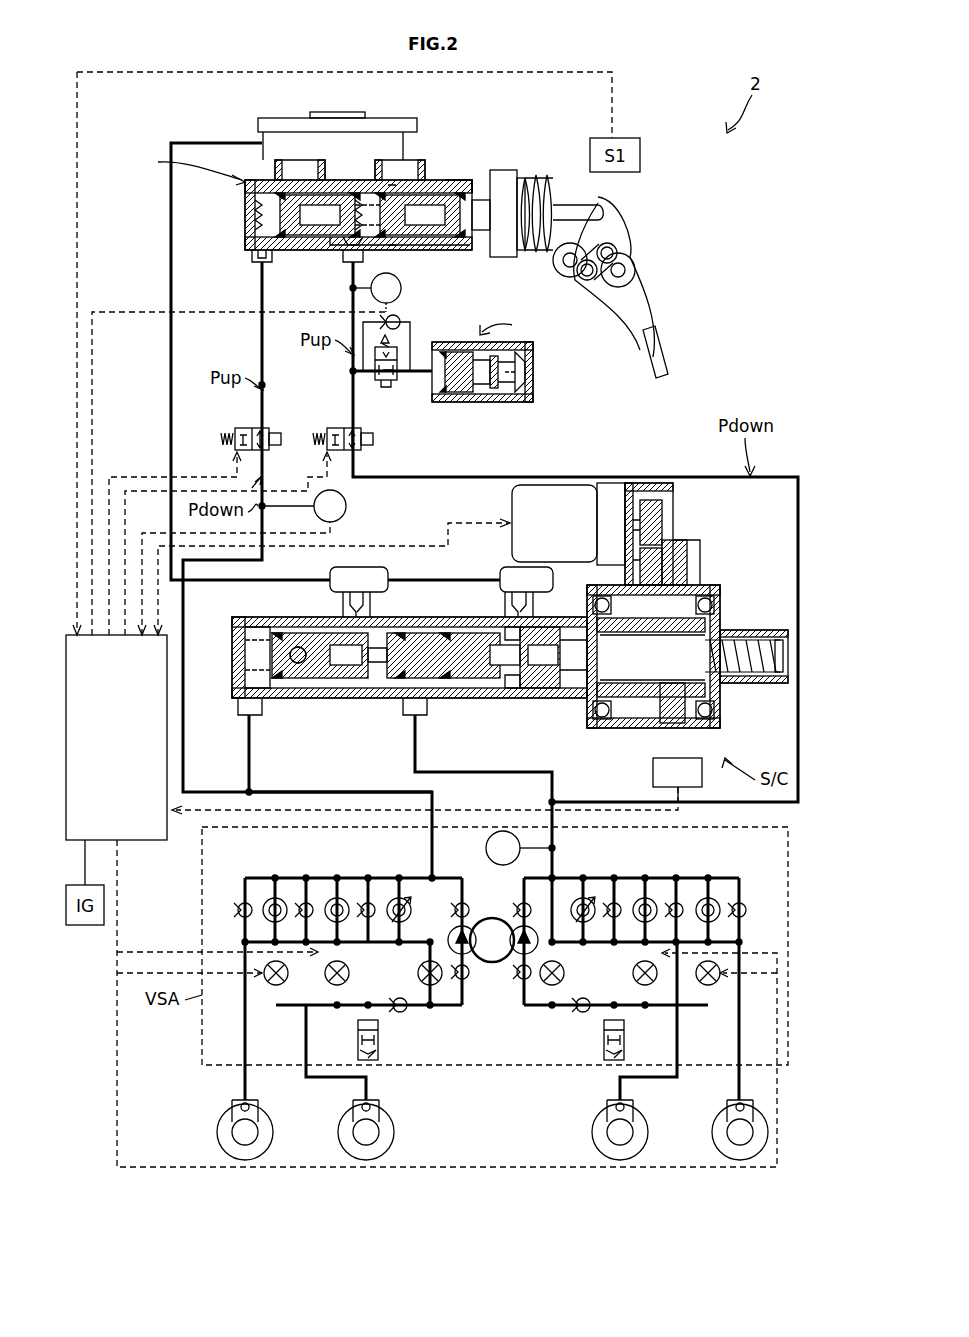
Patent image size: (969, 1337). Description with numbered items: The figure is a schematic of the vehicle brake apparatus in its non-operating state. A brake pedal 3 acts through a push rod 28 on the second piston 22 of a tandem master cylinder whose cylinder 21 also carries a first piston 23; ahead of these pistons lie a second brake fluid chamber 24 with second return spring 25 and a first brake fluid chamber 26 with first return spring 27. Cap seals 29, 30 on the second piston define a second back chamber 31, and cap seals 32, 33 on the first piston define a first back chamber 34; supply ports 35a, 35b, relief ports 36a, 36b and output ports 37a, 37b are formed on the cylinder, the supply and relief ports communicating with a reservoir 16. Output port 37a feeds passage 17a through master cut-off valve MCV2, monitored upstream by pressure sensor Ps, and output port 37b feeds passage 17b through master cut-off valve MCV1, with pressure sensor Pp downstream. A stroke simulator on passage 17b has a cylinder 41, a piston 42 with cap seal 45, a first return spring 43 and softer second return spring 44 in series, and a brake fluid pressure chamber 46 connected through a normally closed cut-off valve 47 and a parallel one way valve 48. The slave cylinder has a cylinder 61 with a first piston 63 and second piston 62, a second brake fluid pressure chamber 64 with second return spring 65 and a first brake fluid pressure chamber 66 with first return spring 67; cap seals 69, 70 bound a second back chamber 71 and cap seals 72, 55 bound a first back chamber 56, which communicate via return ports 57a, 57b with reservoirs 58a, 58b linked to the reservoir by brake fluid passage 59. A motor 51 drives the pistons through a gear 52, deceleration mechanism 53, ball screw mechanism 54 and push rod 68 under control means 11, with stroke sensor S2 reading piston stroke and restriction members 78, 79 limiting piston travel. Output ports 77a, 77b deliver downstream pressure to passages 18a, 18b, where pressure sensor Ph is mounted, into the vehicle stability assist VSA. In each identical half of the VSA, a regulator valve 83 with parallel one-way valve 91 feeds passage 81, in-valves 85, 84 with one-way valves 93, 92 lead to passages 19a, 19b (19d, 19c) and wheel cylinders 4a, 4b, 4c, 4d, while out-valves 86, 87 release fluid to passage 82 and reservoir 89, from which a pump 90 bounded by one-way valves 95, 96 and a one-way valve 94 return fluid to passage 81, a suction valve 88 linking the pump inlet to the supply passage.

The brake pedal 3 is at (668, 345).
The wheel cylinder 4a is at (724, 1108).
The wheel cylinder 4b is at (604, 1108).
The wheel cylinder 4c is at (384, 1102).
The wheel cylinder 4d is at (262, 1102).
The control means 11 is at (137, 842).
The reservoir 16 is at (265, 132).
The brake fluid pressure passage 17a is at (352, 392).
The brake fluid pressure passage 17b is at (262, 352).
The brake fluid pressure passage 18a is at (550, 784).
The brake fluid pressure passage 18b is at (345, 790).
The brake fluid passage 19a is at (739, 1084).
The brake fluid passage 19b is at (620, 1084).
The brake fluid passage 19c is at (368, 1082).
The brake fluid passage 19d is at (244, 1082).
The cylinder 21 is at (462, 182).
The second piston 22 is at (420, 215).
The first piston 23 is at (317, 215).
The second brake fluid chamber 24 is at (366, 200).
The second return spring 25 is at (400, 246).
The first brake fluid chamber 26 is at (280, 182).
The first return spring 27 is at (258, 210).
The push rod 28 is at (527, 175).
The cap seal 29 is at (392, 186).
The cap seal 30 is at (503, 170).
The second back chamber 31 is at (481, 200).
The cap seal 32 is at (295, 240).
The cap seal 33 is at (352, 262).
The first back chamber 34 is at (318, 240).
The supply port 35a is at (458, 193).
The supply port 35b is at (355, 193).
The relief port 36a is at (378, 193).
The relief port 36b is at (280, 193).
The output port 37a is at (356, 246).
The output port 37b is at (258, 252).
The cylinder 41 is at (520, 392).
The piston 42 is at (460, 392).
The first return spring 43 is at (533, 380).
The second return spring 44 is at (496, 390).
The cap seal 45 is at (470, 384).
The brake fluid pressure chamber 46 is at (442, 392).
The cut-off valve 47 is at (398, 380).
The one way valve 48 is at (400, 320).
The motor 51 is at (512, 505).
The gear 52 is at (662, 505).
The deceleration mechanism 53 is at (684, 548).
The ball screw mechanism 54 is at (730, 596).
The cap seal 55 is at (400, 698).
The first back chamber 56 is at (365, 698).
The return port 57a is at (538, 609).
The return port 57b is at (348, 609).
The reservoir 58a is at (508, 568).
The reservoir 58b is at (355, 568).
The brake fluid passage 59 is at (171, 244).
The cylinder 61 is at (590, 728).
The second piston 62 is at (453, 655).
The first piston 63 is at (320, 655).
The second brake fluid pressure chamber 64 is at (425, 630).
The second return spring 65 is at (420, 690).
The first brake fluid pressure chamber 66 is at (248, 638).
The first return spring 67 is at (255, 715).
The push rod 68 is at (768, 645).
The cap seal 69 is at (450, 680).
The cap seal 70 is at (575, 698).
The second back chamber 71 is at (540, 690).
The cap seal 72 is at (290, 698).
The output port 77a is at (418, 715).
The output port 77b is at (244, 715).
The restriction member 78 is at (514, 690).
The restriction member 79 is at (300, 663).
The brake fluid pressure passage 81 is at (326, 877).
The brake fluid pressure passage 82 is at (312, 1006).
The regulator valve 83 is at (412, 898).
The in-valve 84 is at (340, 898).
The in-valve 85 is at (263, 900).
The out-valve 86 is at (270, 985).
The out-valve 87 is at (349, 978).
The suction valve 88 is at (420, 972).
The reservoir 89 is at (380, 1053).
The pump 90 is at (478, 972).
The one-way valve 91 is at (370, 898).
The one-way valve 92 is at (304, 903).
The one-way valve 93 is at (238, 908).
The one-way valve 94 is at (408, 1010).
The one-way valve 95 is at (515, 985).
The one-way valve 96 is at (520, 915).
The pressure sensor Ps is at (377, 288).
The pressure sensor Pp is at (302, 506).
The pressure sensor Ph is at (520, 848).
The master cut-off valve MCV1 is at (252, 428).
The master cut-off valve MCV2 is at (344, 428).
The stroke sensor S2 is at (677, 780).
The vehicle stability assist VSA is at (495, 963).